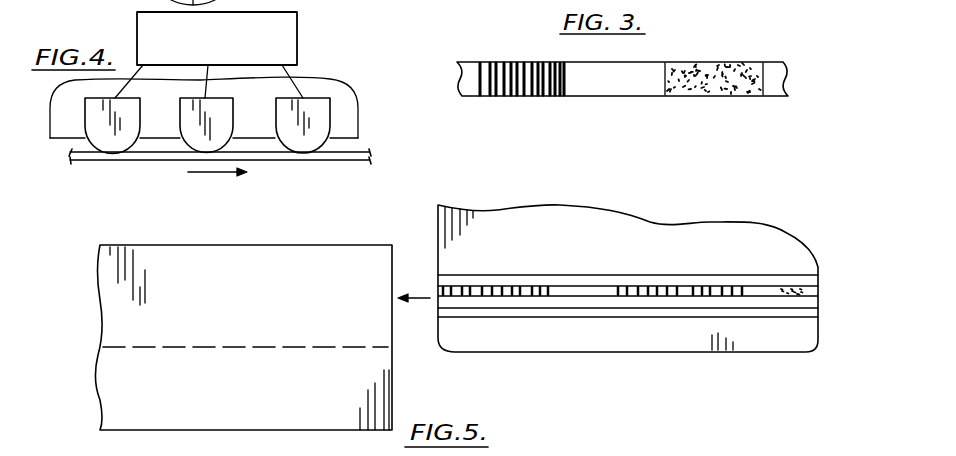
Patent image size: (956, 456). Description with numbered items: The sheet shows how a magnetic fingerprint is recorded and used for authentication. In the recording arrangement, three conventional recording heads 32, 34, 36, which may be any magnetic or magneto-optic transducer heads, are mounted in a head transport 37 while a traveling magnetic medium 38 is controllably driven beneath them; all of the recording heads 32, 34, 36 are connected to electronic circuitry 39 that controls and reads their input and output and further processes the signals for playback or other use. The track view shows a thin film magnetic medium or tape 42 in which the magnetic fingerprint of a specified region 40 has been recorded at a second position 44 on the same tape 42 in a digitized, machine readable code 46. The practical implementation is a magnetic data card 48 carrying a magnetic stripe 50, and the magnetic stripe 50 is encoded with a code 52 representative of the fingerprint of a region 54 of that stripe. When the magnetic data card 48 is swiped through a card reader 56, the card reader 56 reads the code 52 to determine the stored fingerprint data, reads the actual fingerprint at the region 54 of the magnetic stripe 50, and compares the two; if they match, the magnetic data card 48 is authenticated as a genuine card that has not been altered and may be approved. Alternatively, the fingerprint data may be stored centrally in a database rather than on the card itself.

In FIG. 4, the recording head 32 is at (112, 146).
In FIG. 4, the recording head 34 is at (197, 146).
In FIG. 4, the recording head 36 is at (303, 146).
In FIG. 4, the head transport 37 is at (325, 88).
In FIG. 4, the traveling magnetic medium 38 is at (343, 167).
In FIG. 4, the electronic circuitry 39 is at (301, 28).
In FIG. 3, the specified region 40 is at (712, 68).
In FIG. 3, the thin film magnetic medium or tape 42 is at (783, 63).
In FIG. 3, the second position 44 is at (508, 57).
In FIG. 3, the digitized machine readable code 46 is at (511, 86).
In FIG. 5, the magnetic data card 48 is at (607, 347).
In FIG. 5, the magnetic stripe 50 is at (543, 280).
In FIG. 5, the code 52 is at (668, 290).
In FIG. 5, the region 54 is at (795, 292).
In FIG. 5, the card reader 56 is at (372, 364).